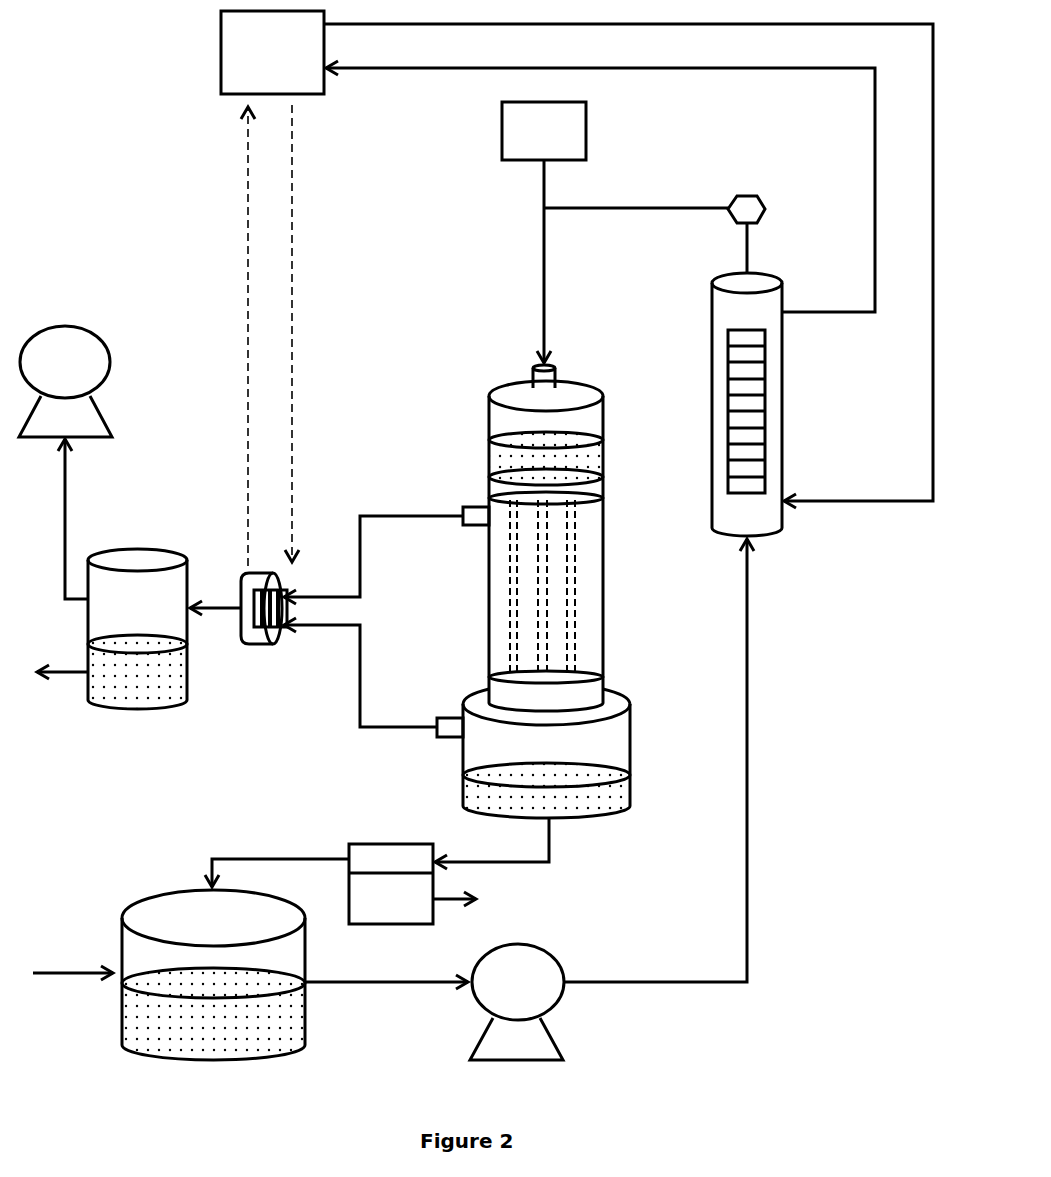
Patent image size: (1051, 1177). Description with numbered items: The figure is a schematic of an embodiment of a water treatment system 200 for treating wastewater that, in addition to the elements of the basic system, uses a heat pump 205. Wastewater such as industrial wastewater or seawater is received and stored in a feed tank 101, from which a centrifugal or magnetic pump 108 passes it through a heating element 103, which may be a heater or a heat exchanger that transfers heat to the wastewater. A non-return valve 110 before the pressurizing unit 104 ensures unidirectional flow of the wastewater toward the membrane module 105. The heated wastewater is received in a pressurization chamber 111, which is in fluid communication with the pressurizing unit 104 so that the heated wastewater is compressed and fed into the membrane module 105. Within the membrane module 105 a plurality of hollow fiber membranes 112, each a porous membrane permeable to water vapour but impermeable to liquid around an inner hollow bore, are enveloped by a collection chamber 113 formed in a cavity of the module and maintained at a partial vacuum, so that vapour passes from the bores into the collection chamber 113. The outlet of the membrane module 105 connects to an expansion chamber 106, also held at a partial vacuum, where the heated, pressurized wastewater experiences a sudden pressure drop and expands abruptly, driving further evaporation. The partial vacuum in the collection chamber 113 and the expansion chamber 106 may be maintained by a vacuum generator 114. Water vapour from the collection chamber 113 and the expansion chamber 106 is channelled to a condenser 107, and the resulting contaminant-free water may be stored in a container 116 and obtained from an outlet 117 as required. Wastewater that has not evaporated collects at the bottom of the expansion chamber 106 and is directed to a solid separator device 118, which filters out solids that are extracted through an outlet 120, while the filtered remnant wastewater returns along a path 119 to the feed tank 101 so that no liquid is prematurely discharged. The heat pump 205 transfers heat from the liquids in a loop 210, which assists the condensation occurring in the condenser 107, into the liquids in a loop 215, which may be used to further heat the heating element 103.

The water treatment system 200 is at (133, 222).
The heat pump 205 is at (272, 52).
The loop 215 is at (628, 262).
The loop 210 is at (270, 335).
The pressurizing unit 104 is at (615, 232).
The non-return valve 110 is at (727, 195).
The heating element 103 is at (697, 390).
The pressurization chamber 111 is at (525, 422).
The membrane module 105 is at (488, 555).
The collection chamber 113 is at (503, 598).
The hollow fiber membrane 112 is at (543, 648).
The expansion chamber 106 is at (487, 748).
The condenser 107 is at (268, 652).
The container 116 is at (127, 711).
The outlet 117 is at (62, 656).
The vacuum generator 114 is at (65, 462).
The feed tank 101 is at (157, 918).
The path 119 is at (280, 860).
The solid separator device 118 is at (391, 884).
The outlet 120 is at (478, 900).
The pump 108 is at (608, 799).